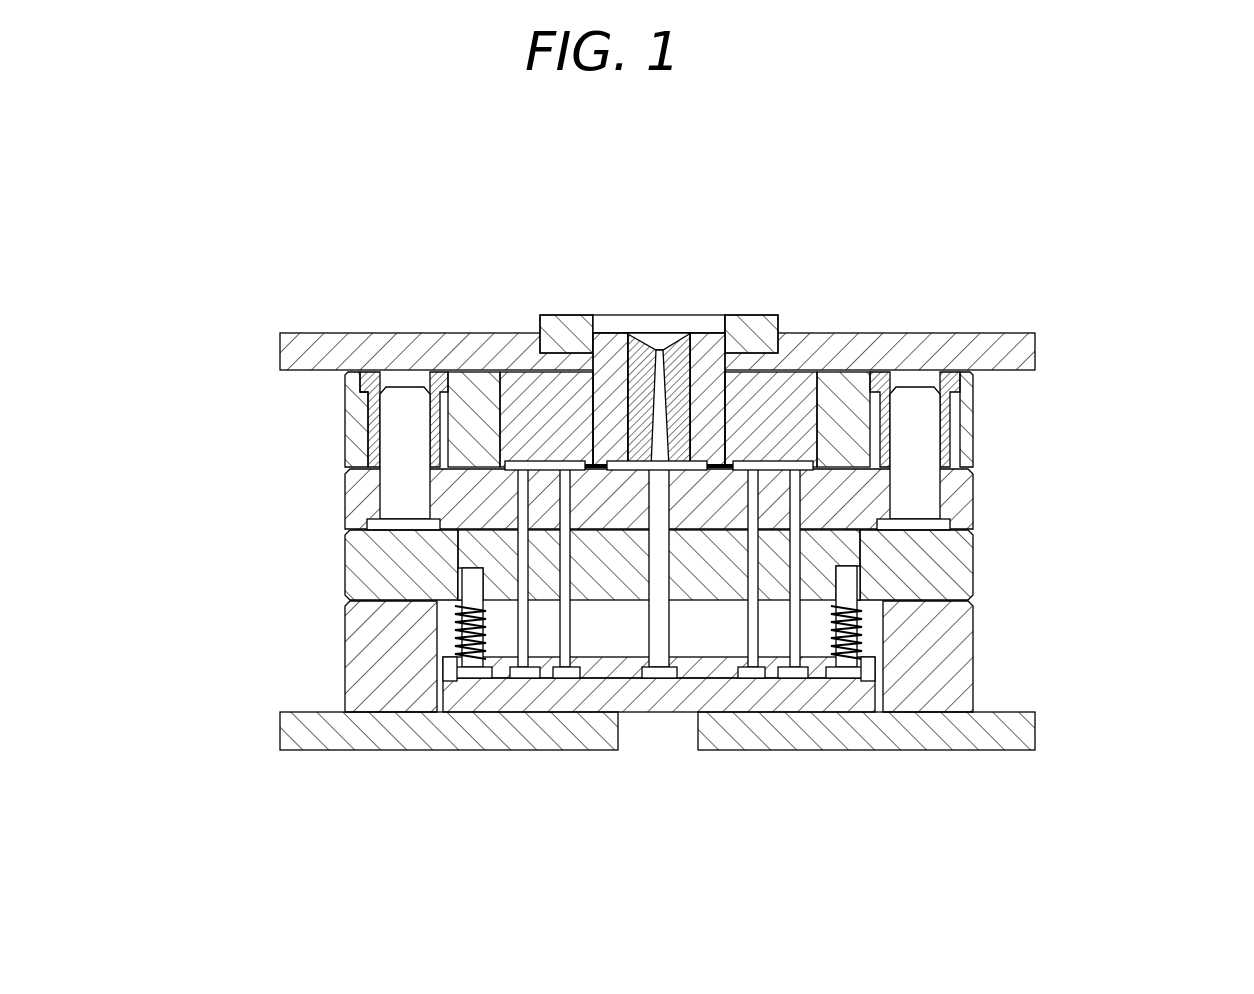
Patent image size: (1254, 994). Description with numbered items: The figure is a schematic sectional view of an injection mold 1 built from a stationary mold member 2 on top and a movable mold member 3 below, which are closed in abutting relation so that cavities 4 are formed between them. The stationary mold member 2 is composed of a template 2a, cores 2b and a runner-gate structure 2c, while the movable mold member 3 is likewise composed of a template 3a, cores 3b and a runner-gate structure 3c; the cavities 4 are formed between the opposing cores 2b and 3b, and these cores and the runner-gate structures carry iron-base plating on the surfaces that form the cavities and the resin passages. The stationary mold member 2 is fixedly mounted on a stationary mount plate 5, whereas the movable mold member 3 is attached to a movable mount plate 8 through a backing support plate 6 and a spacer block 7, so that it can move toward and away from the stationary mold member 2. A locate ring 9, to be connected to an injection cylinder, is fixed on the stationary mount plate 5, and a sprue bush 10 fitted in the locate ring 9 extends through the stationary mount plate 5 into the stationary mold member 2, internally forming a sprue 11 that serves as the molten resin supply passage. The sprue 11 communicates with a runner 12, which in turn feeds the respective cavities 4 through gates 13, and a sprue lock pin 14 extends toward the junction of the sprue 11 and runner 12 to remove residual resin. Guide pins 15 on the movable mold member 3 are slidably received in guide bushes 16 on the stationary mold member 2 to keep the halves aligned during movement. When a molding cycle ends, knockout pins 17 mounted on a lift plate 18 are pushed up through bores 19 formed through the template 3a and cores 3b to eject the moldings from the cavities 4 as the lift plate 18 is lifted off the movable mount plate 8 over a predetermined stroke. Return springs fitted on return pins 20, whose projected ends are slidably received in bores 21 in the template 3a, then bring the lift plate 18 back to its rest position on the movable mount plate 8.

The injection mold 1 is at (962, 243).
The stationary mold member 2 is at (330, 435).
The template 2a is at (468, 400).
The cores 2b is at (530, 385).
The runner-gate structure 2c is at (735, 390).
The movable mold member 3 is at (988, 498).
The template 3a is at (358, 500).
The cores 3b is at (465, 562).
The runner-gate structure 3c is at (628, 670).
The cavities 4 is at (495, 420).
The stationary mount plate 5 is at (315, 352).
The backing support plate 6 is at (362, 577).
The spacer block 7 is at (937, 695).
The movable mount plate 8 is at (947, 745).
The locate ring 9 is at (555, 345).
The sprue bush 10 is at (625, 345).
The sprue 11 is at (660, 345).
The runner 12 is at (708, 340).
The gates 13 is at (570, 695).
The sprue lock pin 14 is at (660, 617).
The guide pins 15 is at (395, 400).
The guide bushes 16 is at (357, 455).
The knockout pins 17 is at (530, 695).
The lift plate 18 is at (695, 695).
The bores 19 is at (465, 658).
The return pins 20 is at (448, 690).
The bores 21 is at (453, 610).